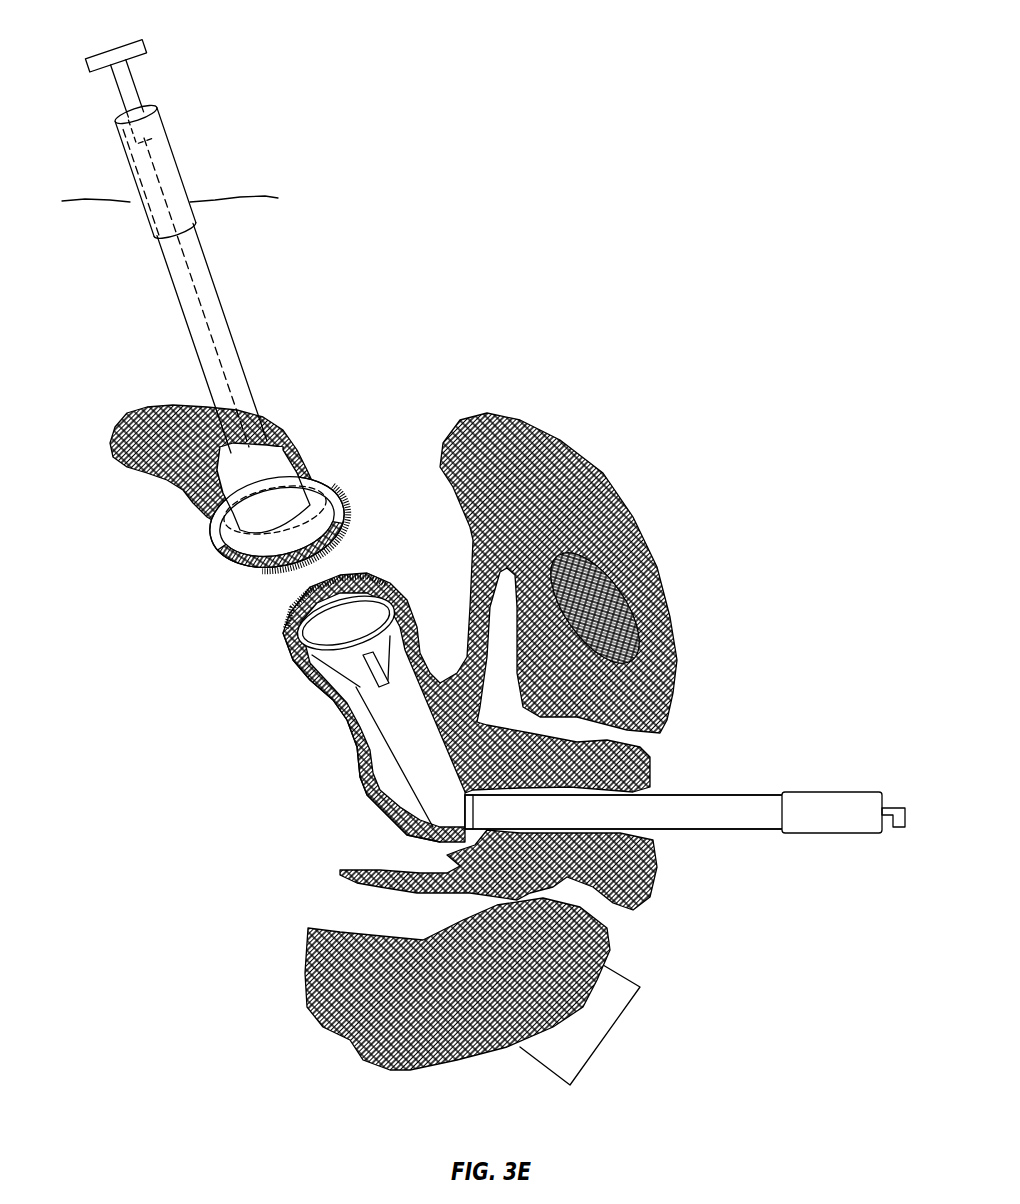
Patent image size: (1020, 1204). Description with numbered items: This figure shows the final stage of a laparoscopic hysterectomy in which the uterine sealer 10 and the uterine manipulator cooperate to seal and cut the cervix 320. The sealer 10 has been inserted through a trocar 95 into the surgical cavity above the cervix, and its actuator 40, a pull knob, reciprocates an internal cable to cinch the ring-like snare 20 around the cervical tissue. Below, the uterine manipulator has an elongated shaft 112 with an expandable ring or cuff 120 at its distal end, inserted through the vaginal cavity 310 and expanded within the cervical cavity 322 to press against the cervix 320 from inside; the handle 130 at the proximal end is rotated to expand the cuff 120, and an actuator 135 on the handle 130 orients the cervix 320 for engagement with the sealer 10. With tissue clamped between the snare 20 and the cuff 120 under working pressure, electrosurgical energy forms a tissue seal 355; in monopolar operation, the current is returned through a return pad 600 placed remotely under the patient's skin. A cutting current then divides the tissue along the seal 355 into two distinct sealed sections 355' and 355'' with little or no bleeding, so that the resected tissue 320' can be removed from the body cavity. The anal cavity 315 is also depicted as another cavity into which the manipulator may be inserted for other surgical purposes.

The uterine sealer 10 is at (178, 132).
The actuator 40 is at (118, 45).
The trocar 95 is at (122, 153).
The ring-like snare 20 is at (340, 483).
The tissue seal 355 is at (331, 529).
The first sealed section 355' is at (293, 609).
The second sealed section 355'' is at (258, 564).
The resected tissue 320' is at (204, 443).
The cervix 320 is at (452, 627).
The cervical cavity 322 is at (362, 735).
The expandable ring or cuff 120 is at (300, 664).
The vaginal cavity 310 is at (660, 784).
The elongated shaft 112 is at (740, 793).
The handle 130 is at (847, 790).
The actuator 135 is at (900, 830).
The anal cavity 315 is at (620, 933).
The return pad 600 is at (613, 1030).